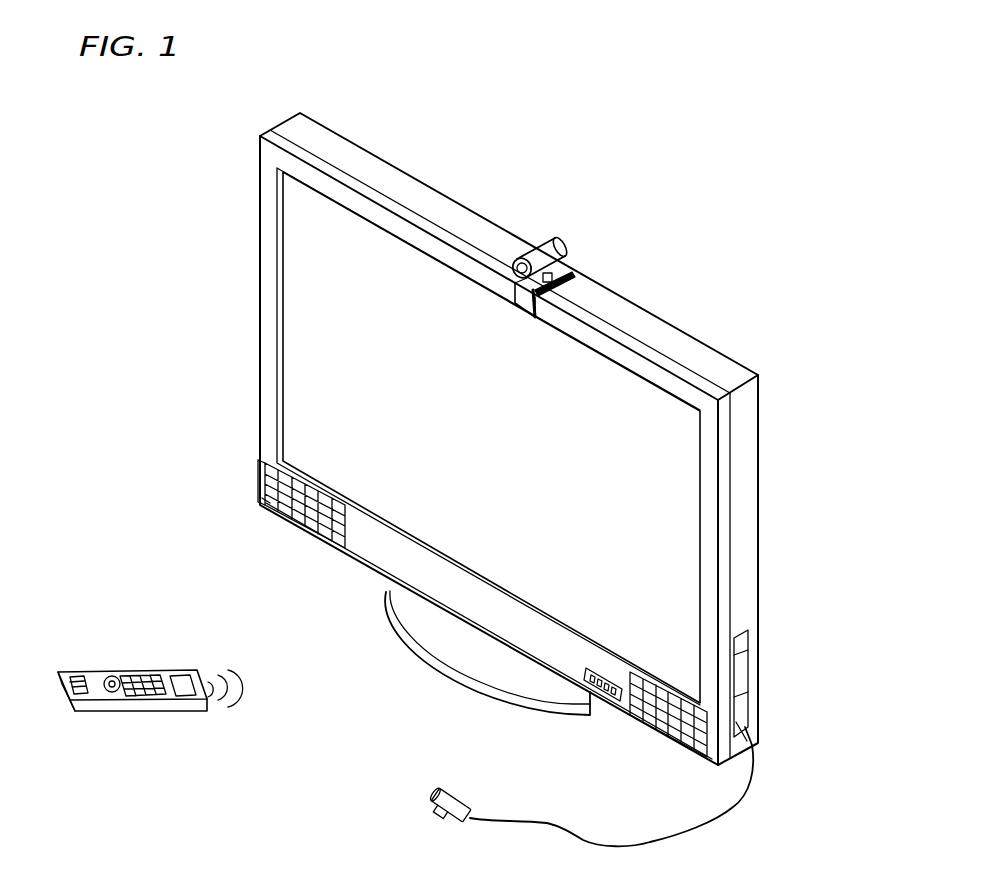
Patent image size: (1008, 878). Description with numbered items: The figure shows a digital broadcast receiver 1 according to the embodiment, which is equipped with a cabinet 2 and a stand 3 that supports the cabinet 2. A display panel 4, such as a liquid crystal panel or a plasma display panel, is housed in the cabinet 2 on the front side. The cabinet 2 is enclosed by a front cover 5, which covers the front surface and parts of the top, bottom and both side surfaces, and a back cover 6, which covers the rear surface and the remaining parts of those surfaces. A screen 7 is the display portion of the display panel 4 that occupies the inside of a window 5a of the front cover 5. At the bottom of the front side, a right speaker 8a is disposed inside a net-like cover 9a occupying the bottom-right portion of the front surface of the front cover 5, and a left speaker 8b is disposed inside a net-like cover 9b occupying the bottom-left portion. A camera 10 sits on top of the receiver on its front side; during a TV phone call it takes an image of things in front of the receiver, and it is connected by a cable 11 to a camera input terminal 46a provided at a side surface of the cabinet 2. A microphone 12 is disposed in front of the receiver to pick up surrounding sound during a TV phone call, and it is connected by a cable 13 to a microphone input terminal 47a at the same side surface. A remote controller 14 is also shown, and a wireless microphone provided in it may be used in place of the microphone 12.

The digital broadcast receiver 1 is at (569, 204).
The cabinet 2 is at (610, 288).
The stand 3 is at (405, 643).
The display panel 4 is at (315, 335).
The front cover 5 is at (260, 223).
The window 5a is at (283, 285).
The back cover 6 is at (760, 465).
The screen 7 is at (433, 508).
The right speaker 8a is at (668, 718).
The left speaker 8b is at (305, 514).
The net-like cover 9a is at (638, 714).
The net-like cover 9b is at (266, 504).
The camera 10 is at (543, 238).
The cable 11 is at (752, 682).
The microphone 12 is at (430, 803).
The cable 13 is at (557, 820).
The remote controller 14 is at (180, 712).
The camera input terminal 46a is at (735, 653).
The microphone input terminal 47a is at (735, 695).